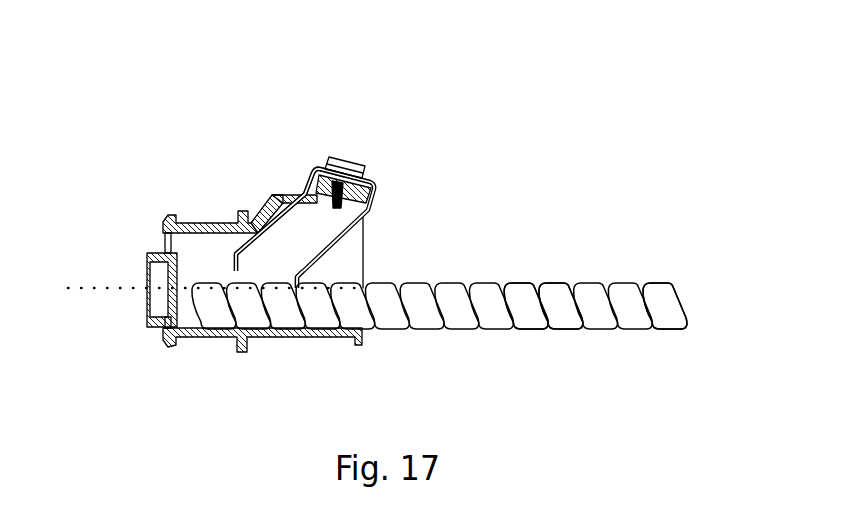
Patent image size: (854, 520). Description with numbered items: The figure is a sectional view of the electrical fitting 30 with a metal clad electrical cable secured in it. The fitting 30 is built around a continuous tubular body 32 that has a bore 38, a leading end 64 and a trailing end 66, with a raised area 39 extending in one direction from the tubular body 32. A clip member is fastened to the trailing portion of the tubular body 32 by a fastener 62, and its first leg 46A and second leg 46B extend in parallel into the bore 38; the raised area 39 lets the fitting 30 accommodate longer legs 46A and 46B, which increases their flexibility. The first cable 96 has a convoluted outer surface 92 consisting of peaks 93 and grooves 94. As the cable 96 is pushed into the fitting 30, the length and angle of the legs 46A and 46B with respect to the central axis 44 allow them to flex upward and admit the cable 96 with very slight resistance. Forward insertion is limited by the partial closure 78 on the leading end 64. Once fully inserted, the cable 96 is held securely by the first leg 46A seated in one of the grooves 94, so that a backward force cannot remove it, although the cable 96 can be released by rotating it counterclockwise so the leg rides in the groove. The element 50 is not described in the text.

The electrical fitting 30 is at (132, 132).
The tubular body 32 is at (262, 205).
The bore 38 is at (350, 274).
The raised area 39 is at (283, 198).
The central axis 44 is at (86, 288).
The first leg 46A is at (330, 247).
The second leg 46B is at (251, 230).
The strap hook tab 50 is at (294, 282).
The fastener 62 is at (350, 160).
The leading end 64 is at (162, 231).
The trailing end 66 is at (363, 335).
The partial closure 78 is at (160, 325).
The convoluted outer surface 92 is at (593, 300).
The peaks 93 is at (532, 330).
The grooves 94 is at (535, 287).
The first cable 96 is at (640, 331).